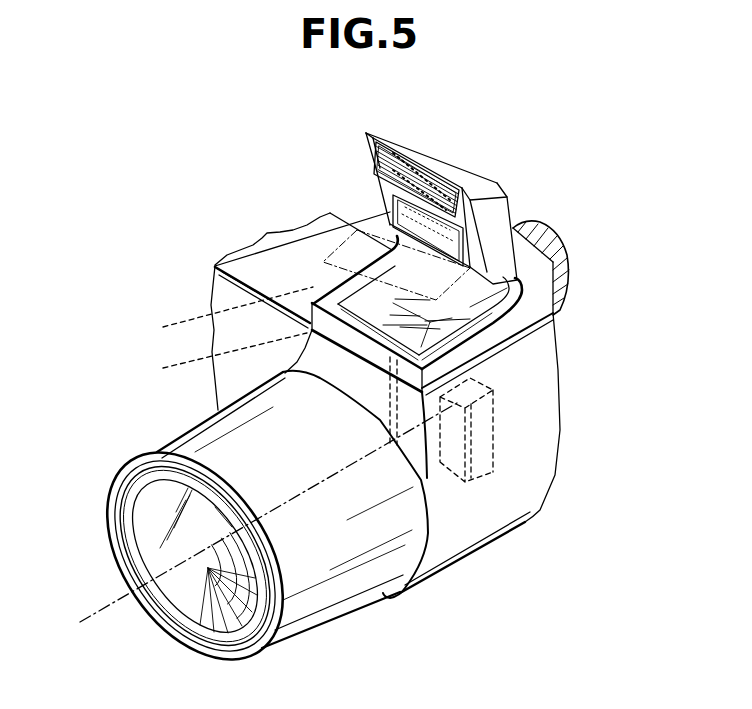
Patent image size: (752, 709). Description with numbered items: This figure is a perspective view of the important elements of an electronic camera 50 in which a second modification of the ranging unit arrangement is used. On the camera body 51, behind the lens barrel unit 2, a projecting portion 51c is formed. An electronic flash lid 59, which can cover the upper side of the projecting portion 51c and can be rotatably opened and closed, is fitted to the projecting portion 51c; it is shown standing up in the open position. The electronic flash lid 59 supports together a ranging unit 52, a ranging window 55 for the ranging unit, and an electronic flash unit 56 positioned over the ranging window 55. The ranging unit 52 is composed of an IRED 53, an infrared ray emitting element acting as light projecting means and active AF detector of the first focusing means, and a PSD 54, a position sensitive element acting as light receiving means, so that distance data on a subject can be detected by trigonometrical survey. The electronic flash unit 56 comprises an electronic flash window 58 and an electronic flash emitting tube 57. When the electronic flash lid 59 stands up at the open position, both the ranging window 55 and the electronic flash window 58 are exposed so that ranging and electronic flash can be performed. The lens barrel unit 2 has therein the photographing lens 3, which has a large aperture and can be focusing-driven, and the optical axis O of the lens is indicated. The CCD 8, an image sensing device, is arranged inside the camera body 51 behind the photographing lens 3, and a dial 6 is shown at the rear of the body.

The electronic camera 50 is at (238, 227).
The camera body 51 is at (503, 493).
The projecting portion 51c is at (480, 347).
The ranging unit 52 is at (126, 320).
The IRED 53 is at (216, 360).
The PSD 54 is at (219, 316).
The ranging window 55 is at (214, 266).
The electronic flash unit 56 is at (291, 84).
The electronic flash emitting tube 57 is at (440, 188).
The electronic flash window 58 is at (368, 160).
The electronic flash lid 59 is at (511, 209).
The dial 6 is at (553, 253).
The CCD 8 is at (497, 440).
The lens barrel unit 2 is at (330, 557).
The photographing lens 3 is at (147, 532).
The optical axis O is at (100, 610).